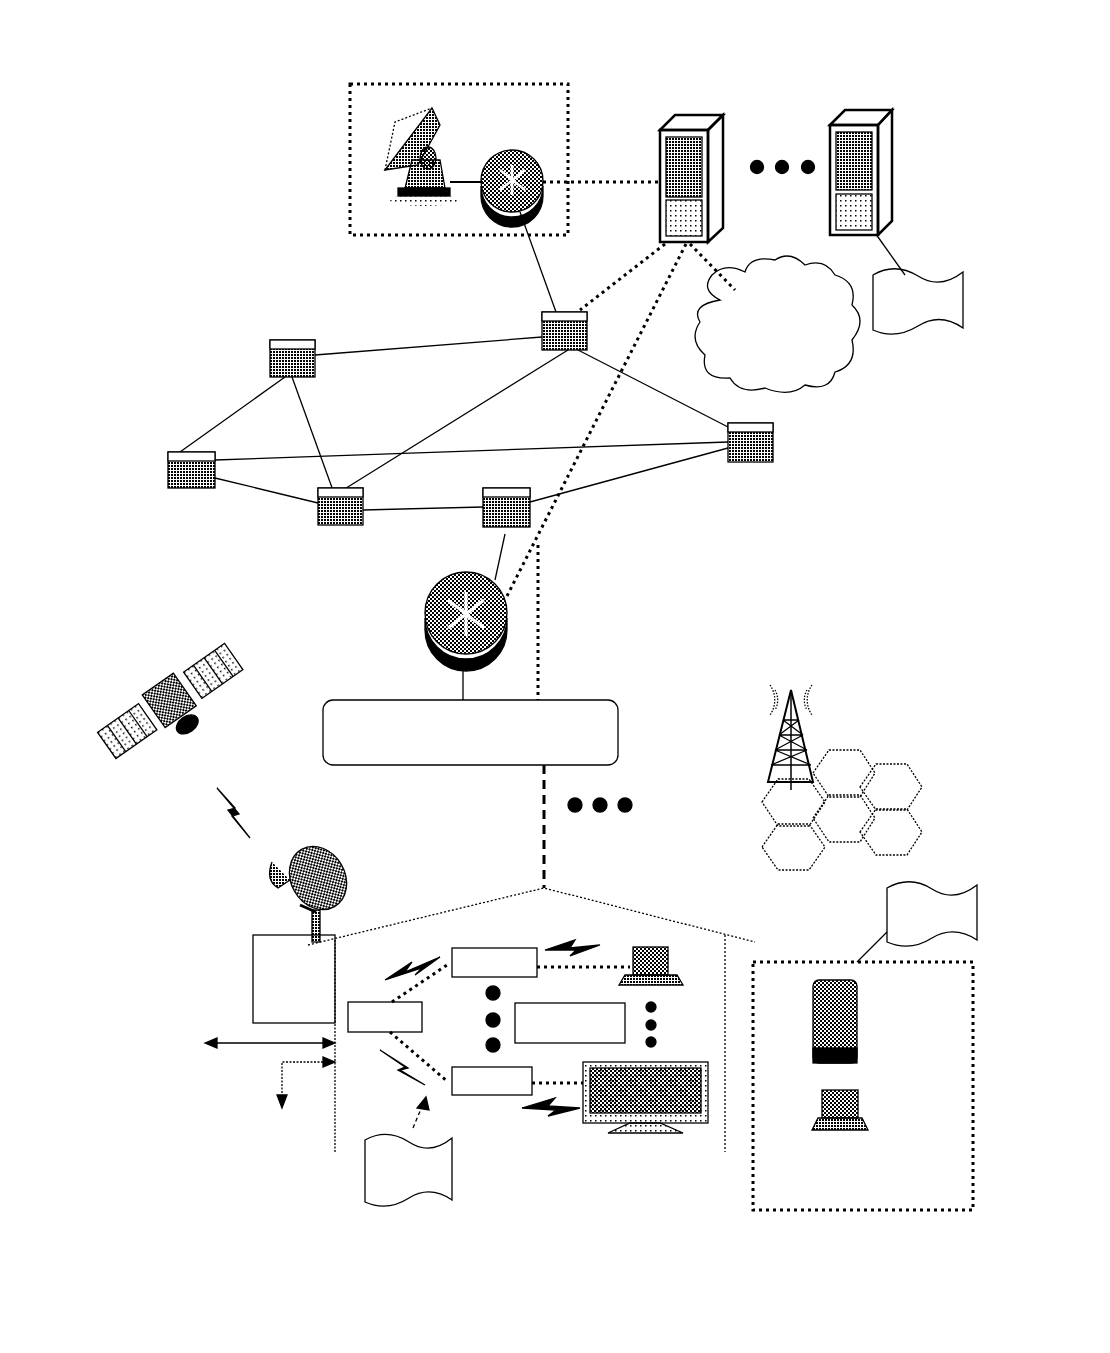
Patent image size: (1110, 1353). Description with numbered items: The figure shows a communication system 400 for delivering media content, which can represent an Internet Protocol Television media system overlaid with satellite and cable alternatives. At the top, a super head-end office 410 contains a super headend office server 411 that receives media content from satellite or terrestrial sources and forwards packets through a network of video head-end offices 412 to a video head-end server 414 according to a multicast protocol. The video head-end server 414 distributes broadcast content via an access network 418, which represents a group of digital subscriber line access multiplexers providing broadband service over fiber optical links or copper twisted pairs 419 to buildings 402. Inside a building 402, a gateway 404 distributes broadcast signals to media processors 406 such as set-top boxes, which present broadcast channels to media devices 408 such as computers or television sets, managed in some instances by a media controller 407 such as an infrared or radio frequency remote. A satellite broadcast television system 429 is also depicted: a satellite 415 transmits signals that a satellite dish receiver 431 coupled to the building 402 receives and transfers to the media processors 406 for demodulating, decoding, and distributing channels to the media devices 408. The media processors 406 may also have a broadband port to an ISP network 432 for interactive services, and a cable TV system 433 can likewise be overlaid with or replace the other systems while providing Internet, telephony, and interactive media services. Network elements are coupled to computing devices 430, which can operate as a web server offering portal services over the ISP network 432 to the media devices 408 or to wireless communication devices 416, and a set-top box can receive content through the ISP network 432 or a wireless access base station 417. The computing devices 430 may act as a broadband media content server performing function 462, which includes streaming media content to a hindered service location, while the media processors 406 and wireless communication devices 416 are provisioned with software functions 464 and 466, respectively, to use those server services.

The communication system 400 is at (140, 181).
The buildings 402 is at (505, 1170).
The gateway 404 is at (412, 1029).
The media processors 406 is at (532, 975).
The media controller 407 is at (610, 1035).
The media devices 408 is at (657, 947).
The super head-end office 410 is at (350, 168).
The super headend office server 411 is at (484, 162).
The network of video head-end offices 412 is at (168, 472).
The video head-end servers 414 is at (425, 620).
The satellite 415 is at (115, 733).
The wireless communication devices 416 is at (866, 994).
The wireless access base station 417 is at (843, 750).
The access network 418 is at (618, 730).
The fiber optical links or copper twisted pairs 419 is at (540, 860).
The satellite broadcast television system 429 is at (244, 772).
The computing devices 430 is at (868, 102).
The satellite dish receiver 431 is at (235, 937).
The ISP network 432 is at (758, 376).
The cable TV system 433 is at (258, 1169).
The function 462 is at (898, 314).
The software functions 464 is at (385, 1182).
The software functions 466 is at (905, 926).